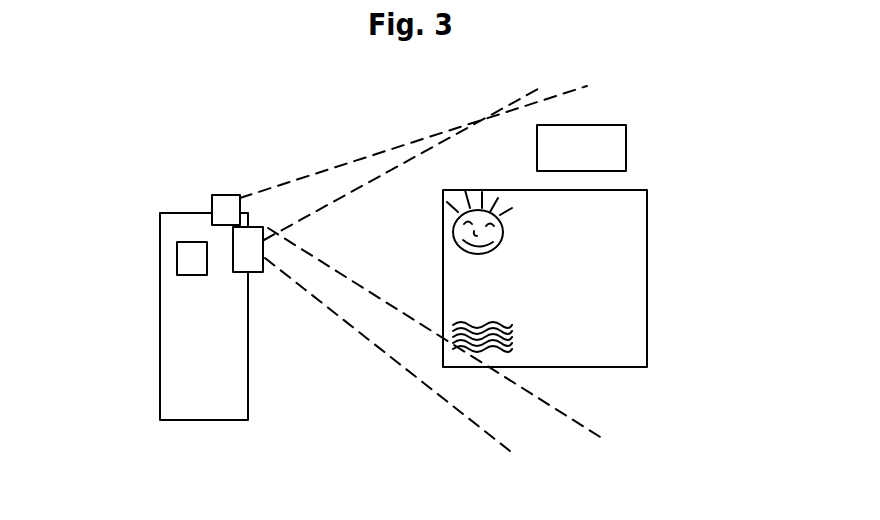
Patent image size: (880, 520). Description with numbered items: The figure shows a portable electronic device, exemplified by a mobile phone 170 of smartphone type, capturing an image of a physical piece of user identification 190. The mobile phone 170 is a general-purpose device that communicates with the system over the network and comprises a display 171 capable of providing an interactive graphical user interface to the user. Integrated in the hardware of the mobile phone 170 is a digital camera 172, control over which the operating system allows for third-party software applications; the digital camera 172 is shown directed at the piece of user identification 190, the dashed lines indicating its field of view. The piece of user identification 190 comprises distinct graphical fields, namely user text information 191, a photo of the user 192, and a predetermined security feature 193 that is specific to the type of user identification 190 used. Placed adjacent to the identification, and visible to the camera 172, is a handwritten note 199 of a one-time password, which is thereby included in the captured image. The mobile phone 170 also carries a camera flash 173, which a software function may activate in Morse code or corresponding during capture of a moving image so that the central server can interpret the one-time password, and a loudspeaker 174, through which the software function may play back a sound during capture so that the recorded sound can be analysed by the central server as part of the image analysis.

The mobile phone 170 is at (159, 307).
The display 171 is at (160, 248).
The integrated digital camera 172 is at (264, 228).
The camera flash 173 is at (231, 195).
The loudspeaker 174 is at (191, 242).
The physical piece of user identification 190 is at (648, 337).
The user text information 191 is at (637, 241).
The photo of the user 192 is at (455, 253).
The predetermined security feature 193 is at (508, 349).
The handwritten note 199 is at (627, 127).